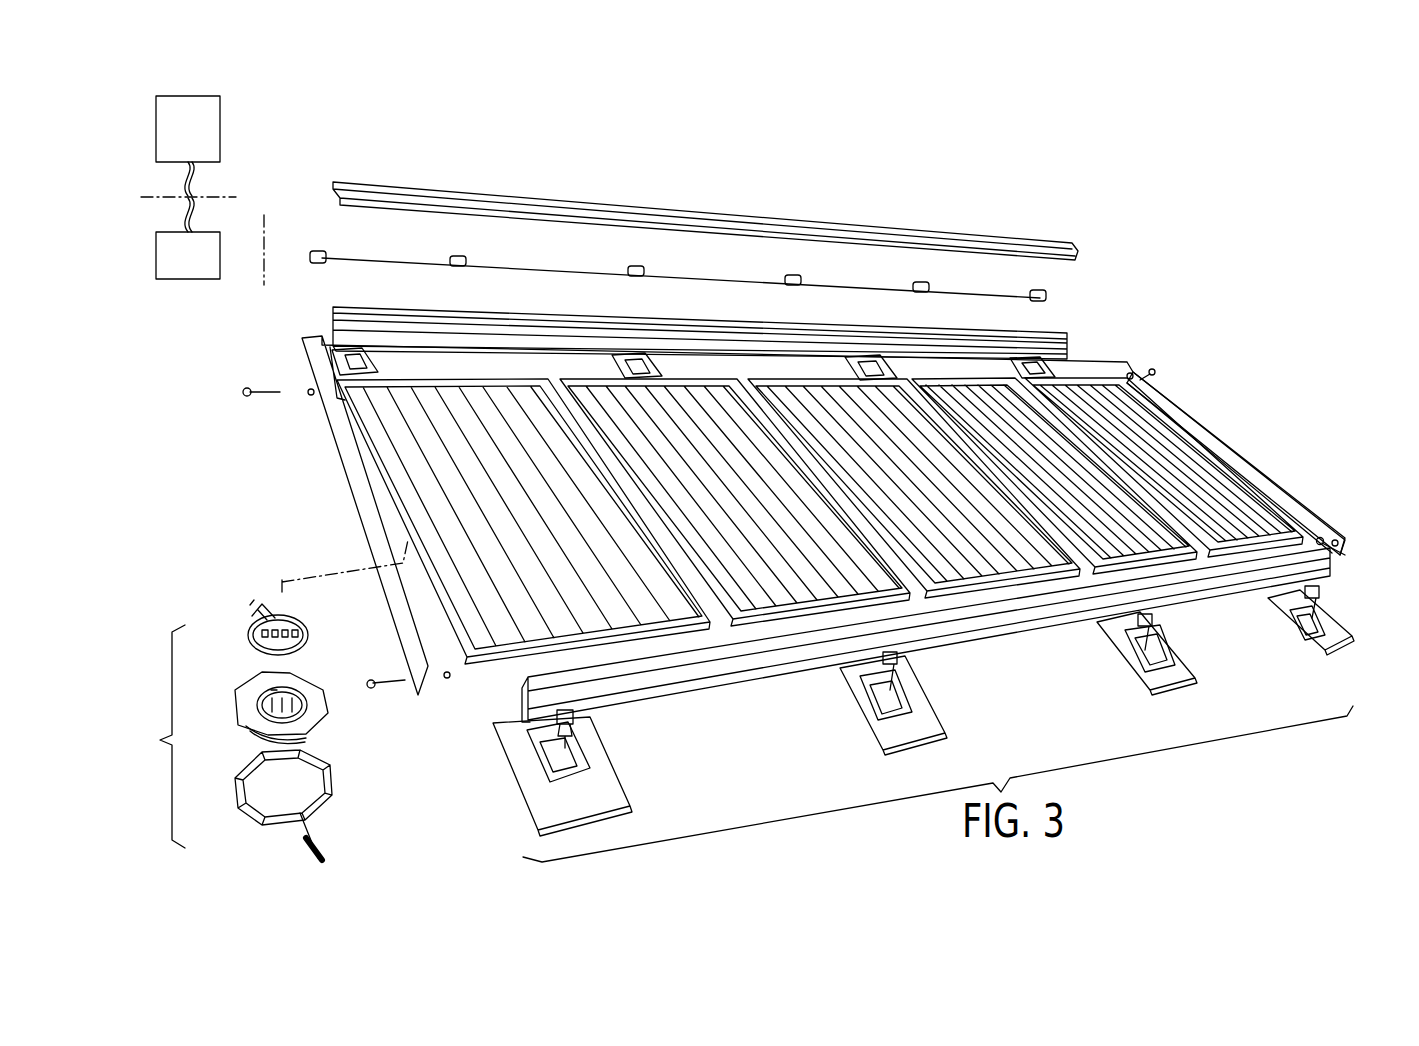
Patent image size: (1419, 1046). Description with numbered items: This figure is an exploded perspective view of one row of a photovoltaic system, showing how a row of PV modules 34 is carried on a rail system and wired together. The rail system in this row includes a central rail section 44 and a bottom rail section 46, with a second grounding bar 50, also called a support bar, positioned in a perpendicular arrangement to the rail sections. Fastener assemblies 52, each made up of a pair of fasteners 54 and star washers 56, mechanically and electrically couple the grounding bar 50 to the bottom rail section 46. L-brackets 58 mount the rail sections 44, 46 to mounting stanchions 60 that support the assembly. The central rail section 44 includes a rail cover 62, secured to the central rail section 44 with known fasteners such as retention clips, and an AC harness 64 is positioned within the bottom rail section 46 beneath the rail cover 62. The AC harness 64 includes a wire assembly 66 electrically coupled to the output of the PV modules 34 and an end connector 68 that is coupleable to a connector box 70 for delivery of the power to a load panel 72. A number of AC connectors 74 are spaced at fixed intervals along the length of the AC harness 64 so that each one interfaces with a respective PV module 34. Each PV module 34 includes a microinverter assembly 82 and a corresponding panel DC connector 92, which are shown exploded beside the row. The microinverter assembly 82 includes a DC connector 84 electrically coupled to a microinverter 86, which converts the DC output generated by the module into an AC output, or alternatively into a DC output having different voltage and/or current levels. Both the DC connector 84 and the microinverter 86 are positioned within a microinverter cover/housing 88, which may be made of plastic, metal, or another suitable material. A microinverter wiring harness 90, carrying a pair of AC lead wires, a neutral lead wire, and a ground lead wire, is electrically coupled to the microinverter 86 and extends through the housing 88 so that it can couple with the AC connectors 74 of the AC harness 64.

The PV module 34 is at (755, 590).
The central rail section 44 is at (1065, 336).
The bottom rail section 46 is at (1068, 636).
The second grounding bar 50 is at (1258, 462).
The fastener assembly 52 is at (258, 432).
The fastener 54 is at (243, 392).
The star washer 56 is at (310, 389).
The L-bracket 58 is at (574, 730).
The mounting stanchion 60 is at (600, 800).
The rail cover 62 is at (985, 240).
The AC harness 64 is at (345, 238).
The wire assembly 66 is at (550, 272).
The end connector 68 is at (315, 262).
The connector box 70 is at (156, 258).
The load panel 72 is at (220, 101).
The AC connector 74 is at (466, 259).
The microinverter assembly 82 is at (255, 709).
The DC connector 84 is at (250, 690).
The microinverter 86 is at (250, 730).
The microinverter cover/housing 88 is at (236, 790).
The microinverter wiring harness 90 is at (320, 850).
The panel DC connector 92 is at (250, 625).